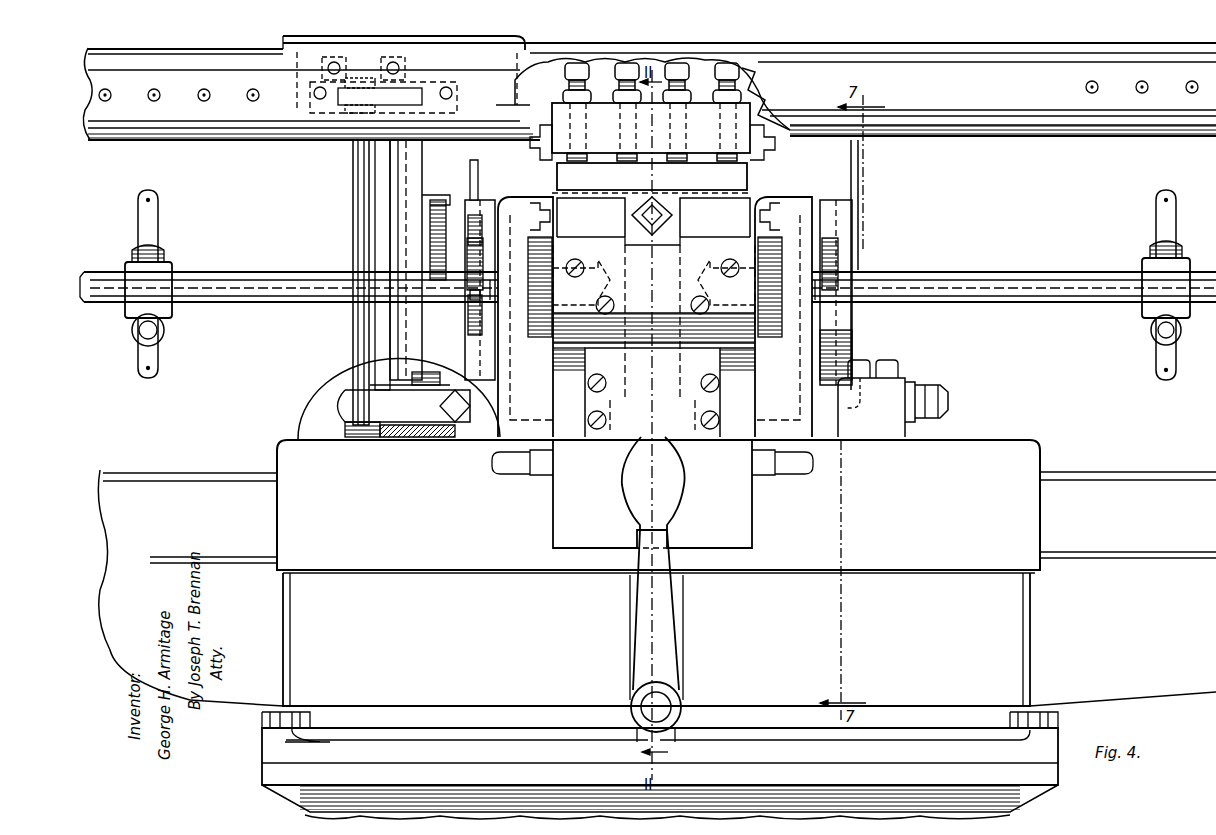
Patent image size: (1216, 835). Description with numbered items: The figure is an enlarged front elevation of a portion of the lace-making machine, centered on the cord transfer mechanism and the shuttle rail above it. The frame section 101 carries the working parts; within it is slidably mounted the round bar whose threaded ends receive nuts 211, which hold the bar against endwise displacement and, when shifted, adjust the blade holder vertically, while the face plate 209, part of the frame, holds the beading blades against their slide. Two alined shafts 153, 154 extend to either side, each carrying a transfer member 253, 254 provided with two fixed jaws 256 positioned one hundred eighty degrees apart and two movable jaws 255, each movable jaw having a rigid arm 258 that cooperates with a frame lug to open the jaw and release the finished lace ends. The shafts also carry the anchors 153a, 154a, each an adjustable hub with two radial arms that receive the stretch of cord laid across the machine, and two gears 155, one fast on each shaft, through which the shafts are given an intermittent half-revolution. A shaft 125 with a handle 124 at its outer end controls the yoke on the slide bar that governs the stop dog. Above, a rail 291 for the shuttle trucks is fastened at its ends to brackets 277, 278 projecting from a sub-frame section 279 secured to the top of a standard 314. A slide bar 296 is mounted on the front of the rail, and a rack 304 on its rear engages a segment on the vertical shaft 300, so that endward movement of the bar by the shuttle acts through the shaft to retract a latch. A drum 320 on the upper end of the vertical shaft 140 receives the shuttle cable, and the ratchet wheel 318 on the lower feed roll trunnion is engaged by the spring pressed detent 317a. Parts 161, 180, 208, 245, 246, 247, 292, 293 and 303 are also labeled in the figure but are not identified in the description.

The frame section 101 is at (658, 506).
The handle 124 is at (670, 620).
The shaft 125 is at (682, 702).
The vertically disposed shaft 140 is at (380, 315).
The shaft 153 is at (1032, 272).
The anchor 153a is at (1145, 300).
The shaft 154 is at (296, 275).
The anchor 154a is at (170, 330).
The gears 155 is at (542, 338).
The valve body 161 is at (910, 380).
The bolted head 180 is at (651, 112).
The plate 208 is at (750, 188).
The face plate 209 is at (654, 298).
The nuts 211 is at (652, 462).
The cylinder 245 is at (591, 217).
The cylinder 246 is at (715, 217).
The block 247 is at (654, 392).
The transfer member 253 is at (852, 345).
The transfer member 254 is at (425, 340).
The movable jaws 255 is at (478, 215).
The fixed jaws 256 is at (475, 190).
The rigid arm 258 is at (483, 330).
The bracket 277 is at (1123, 589).
The bracket 278 is at (193, 589).
The sub-frame section 279 is at (656, 639).
The rail 291 is at (1050, 137).
The bracket 292 is at (784, 291).
The bracket 293 is at (505, 185).
The slide bar 296 is at (979, 96).
The vertical shaft 300 is at (353, 215).
The ring gear 303 is at (312, 420).
The rack 304 is at (320, 104).
The standard 314 is at (412, 770).
The spring pressed detent 317a is at (440, 210).
The ratchet wheel 318 is at (430, 238).
The drum 320 is at (283, 38).